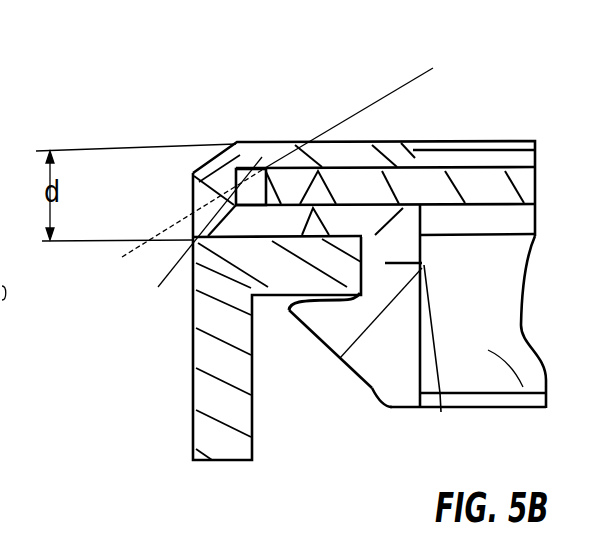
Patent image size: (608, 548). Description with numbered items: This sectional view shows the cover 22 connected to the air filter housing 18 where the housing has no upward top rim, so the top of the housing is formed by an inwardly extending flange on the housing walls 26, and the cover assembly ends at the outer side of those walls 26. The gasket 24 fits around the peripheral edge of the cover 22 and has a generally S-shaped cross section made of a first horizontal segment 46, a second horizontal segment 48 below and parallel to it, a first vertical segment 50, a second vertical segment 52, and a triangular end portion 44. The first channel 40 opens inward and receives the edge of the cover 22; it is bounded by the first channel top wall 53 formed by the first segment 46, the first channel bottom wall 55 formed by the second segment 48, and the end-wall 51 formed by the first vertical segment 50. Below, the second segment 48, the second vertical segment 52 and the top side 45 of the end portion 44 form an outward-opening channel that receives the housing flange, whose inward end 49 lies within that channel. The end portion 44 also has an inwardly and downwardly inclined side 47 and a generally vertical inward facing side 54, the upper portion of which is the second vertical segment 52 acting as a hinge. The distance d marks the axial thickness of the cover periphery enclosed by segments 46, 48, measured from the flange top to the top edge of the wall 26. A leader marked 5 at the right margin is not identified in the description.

The pump assembly 5 is at (367, 251).
The air filter housing 18 is at (163, 441).
The cover 22 is at (480, 183).
The gasket 24 is at (459, 407).
The housing walls 26 is at (195, 398).
The first channel 40 is at (262, 169).
The end portion 44 is at (383, 350).
The top side 45 is at (305, 302).
The first horizontal segment 46 is at (399, 119).
The inwardly and downwardly inclined side 47 is at (362, 380).
The second horizontal segment 48 is at (366, 152).
The inward end 49 is at (360, 238).
The first vertical segment 50 is at (190, 206).
The end-wall 51 is at (366, 106).
The second vertical segment 52 is at (441, 420).
The first channel top wall 53 is at (166, 224).
The inward facing side 54 is at (528, 408).
The first channel bottom wall 55 is at (184, 233).